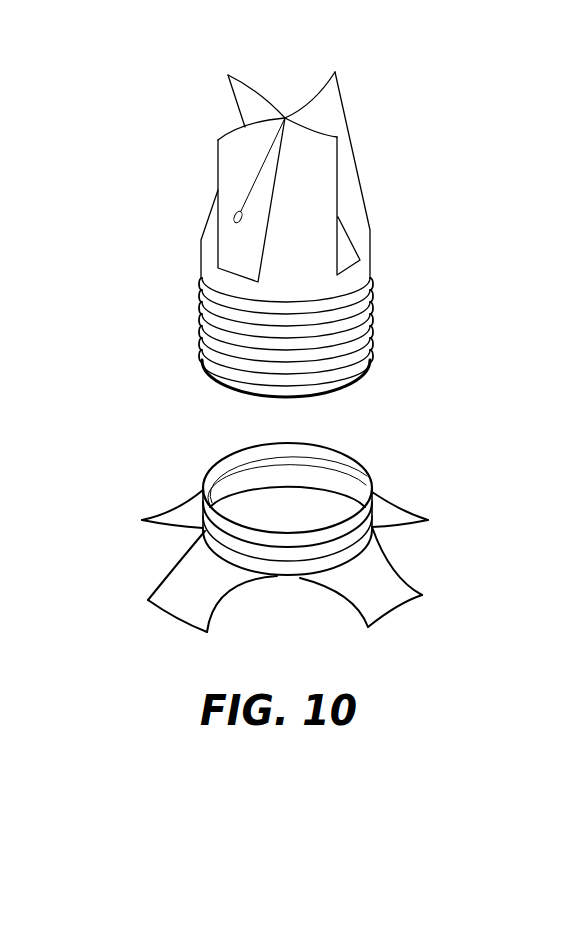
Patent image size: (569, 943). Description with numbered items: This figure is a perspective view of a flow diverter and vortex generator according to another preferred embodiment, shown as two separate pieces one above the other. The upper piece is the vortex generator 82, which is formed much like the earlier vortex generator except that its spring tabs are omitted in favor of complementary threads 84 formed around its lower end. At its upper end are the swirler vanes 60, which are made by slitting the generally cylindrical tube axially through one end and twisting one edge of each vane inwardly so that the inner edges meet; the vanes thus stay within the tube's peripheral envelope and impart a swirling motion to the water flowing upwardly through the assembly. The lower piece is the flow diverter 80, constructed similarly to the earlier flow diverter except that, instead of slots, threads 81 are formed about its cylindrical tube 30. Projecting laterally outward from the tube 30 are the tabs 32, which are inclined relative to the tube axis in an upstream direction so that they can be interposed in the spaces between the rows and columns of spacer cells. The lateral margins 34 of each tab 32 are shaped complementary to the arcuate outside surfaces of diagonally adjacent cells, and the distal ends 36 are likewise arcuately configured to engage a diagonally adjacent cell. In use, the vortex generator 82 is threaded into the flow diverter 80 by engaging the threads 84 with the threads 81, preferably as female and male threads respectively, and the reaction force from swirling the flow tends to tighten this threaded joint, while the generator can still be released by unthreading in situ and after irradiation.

The vortex generator 82 is at (270, 234).
The swirler vanes 60 is at (322, 167).
The complementary threads 84 is at (366, 338).
The flow diverter 80 is at (297, 537).
The cylindrical tube 30 is at (233, 457).
The threads 81 is at (278, 562).
The tabs 32 is at (385, 603).
The lateral margins 34 is at (390, 565).
The distal ends 36 is at (172, 608).